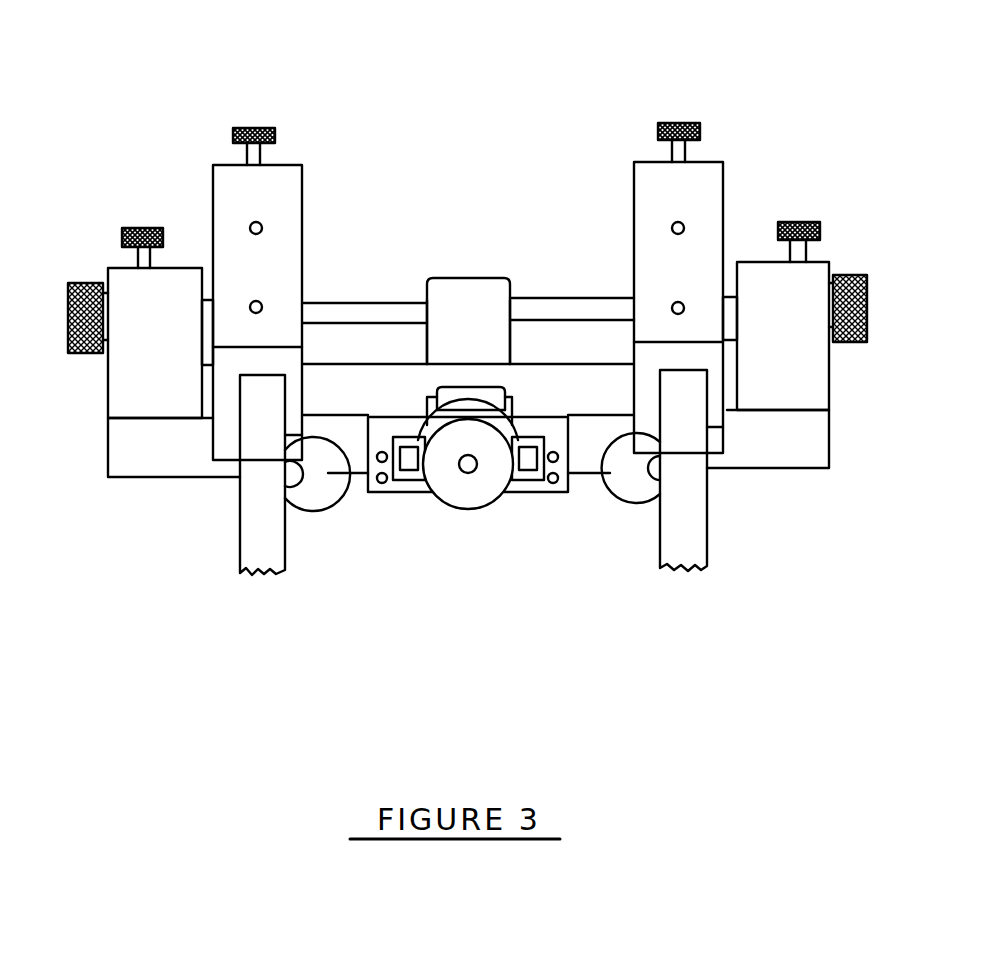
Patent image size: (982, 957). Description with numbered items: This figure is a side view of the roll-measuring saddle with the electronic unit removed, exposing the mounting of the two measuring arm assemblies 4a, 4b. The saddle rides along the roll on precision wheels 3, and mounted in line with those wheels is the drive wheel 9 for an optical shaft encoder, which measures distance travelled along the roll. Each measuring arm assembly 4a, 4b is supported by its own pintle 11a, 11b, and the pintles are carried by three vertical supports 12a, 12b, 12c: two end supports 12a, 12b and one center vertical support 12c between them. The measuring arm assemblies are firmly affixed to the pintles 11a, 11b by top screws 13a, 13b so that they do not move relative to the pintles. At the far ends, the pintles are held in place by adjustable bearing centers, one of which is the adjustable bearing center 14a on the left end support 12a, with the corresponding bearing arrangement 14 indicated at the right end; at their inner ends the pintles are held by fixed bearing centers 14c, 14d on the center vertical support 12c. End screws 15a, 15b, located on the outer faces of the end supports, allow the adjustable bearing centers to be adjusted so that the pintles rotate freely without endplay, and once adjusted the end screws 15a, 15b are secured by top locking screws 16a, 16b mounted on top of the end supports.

The precision wheels 3 is at (640, 490).
The measuring arm 4a is at (238, 195).
The measuring arm 4b is at (655, 182).
The drive wheel 9 is at (467, 490).
The pintle 11a is at (328, 300).
The pintle 11b is at (552, 297).
The vertical support 12a is at (175, 292).
The vertical support 12b is at (758, 287).
The center vertical support 12c is at (472, 300).
The top screw 13a is at (247, 128).
The top screw 13b is at (670, 123).
The right base plate 14 is at (730, 357).
The adjustable bearing center 14a is at (205, 365).
The fixed bearing center 14c is at (426, 305).
The fixed bearing center 14d is at (510, 277).
The end screw 15a is at (63, 313).
The end screw 15b is at (867, 310).
The top locking screw 16a is at (138, 228).
The top locking screw 16b is at (797, 222).